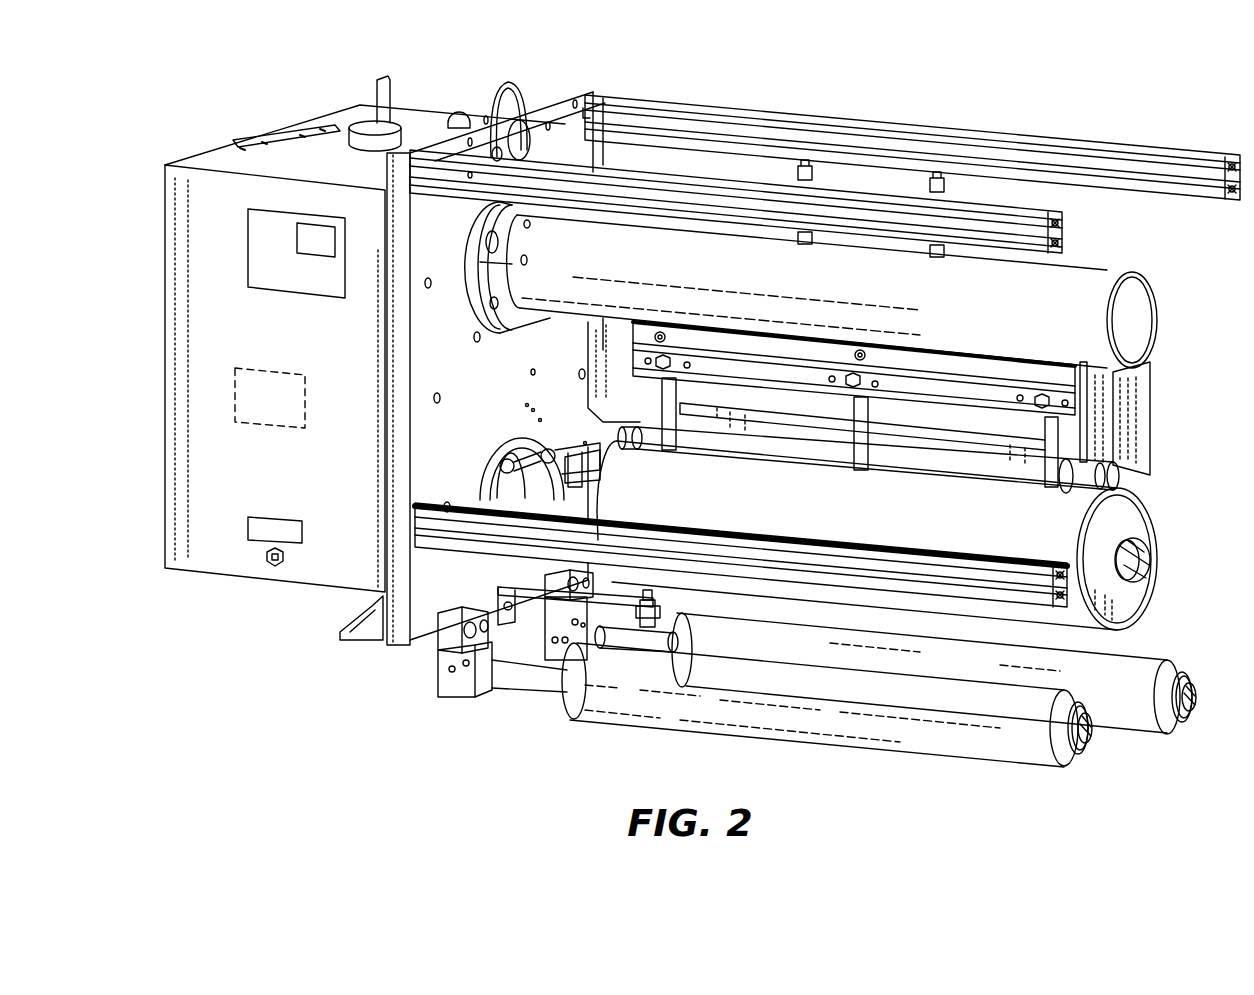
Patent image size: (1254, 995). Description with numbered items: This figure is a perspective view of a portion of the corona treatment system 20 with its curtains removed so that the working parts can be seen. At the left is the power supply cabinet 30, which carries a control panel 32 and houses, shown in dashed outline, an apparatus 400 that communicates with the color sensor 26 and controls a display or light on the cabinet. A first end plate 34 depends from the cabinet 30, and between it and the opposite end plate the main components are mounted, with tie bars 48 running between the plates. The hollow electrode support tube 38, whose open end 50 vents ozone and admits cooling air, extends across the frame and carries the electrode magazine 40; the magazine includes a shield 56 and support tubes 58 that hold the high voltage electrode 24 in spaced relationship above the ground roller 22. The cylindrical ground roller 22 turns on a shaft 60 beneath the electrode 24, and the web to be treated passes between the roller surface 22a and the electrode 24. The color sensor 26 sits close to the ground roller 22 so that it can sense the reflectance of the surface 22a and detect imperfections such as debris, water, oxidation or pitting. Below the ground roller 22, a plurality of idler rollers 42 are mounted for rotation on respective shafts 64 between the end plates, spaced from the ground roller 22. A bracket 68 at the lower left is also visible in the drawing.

The corona treatment system 20 is at (1022, 104).
The ground roller 22 is at (846, 534).
The surface of the ground roller 22a is at (833, 524).
The high voltage electrode 24 is at (1120, 482).
The color sensor 26 is at (650, 628).
The power supply cabinet 30 is at (235, 465).
The control panel 32 is at (233, 243).
The first end plate 34 is at (420, 592).
The electrode support tube 38 is at (843, 285).
The electrode magazine 40 is at (1120, 436).
The idler rollers 42 is at (902, 723).
The tie bars 48 is at (793, 200).
The open end 50 is at (1133, 318).
The shield 56 is at (1133, 450).
The support tubes 58 is at (703, 397).
The shaft 60 is at (1147, 568).
The shafts 64 is at (1093, 735).
The mounting bracket 68 is at (552, 605).
The apparatus 400 is at (235, 392).